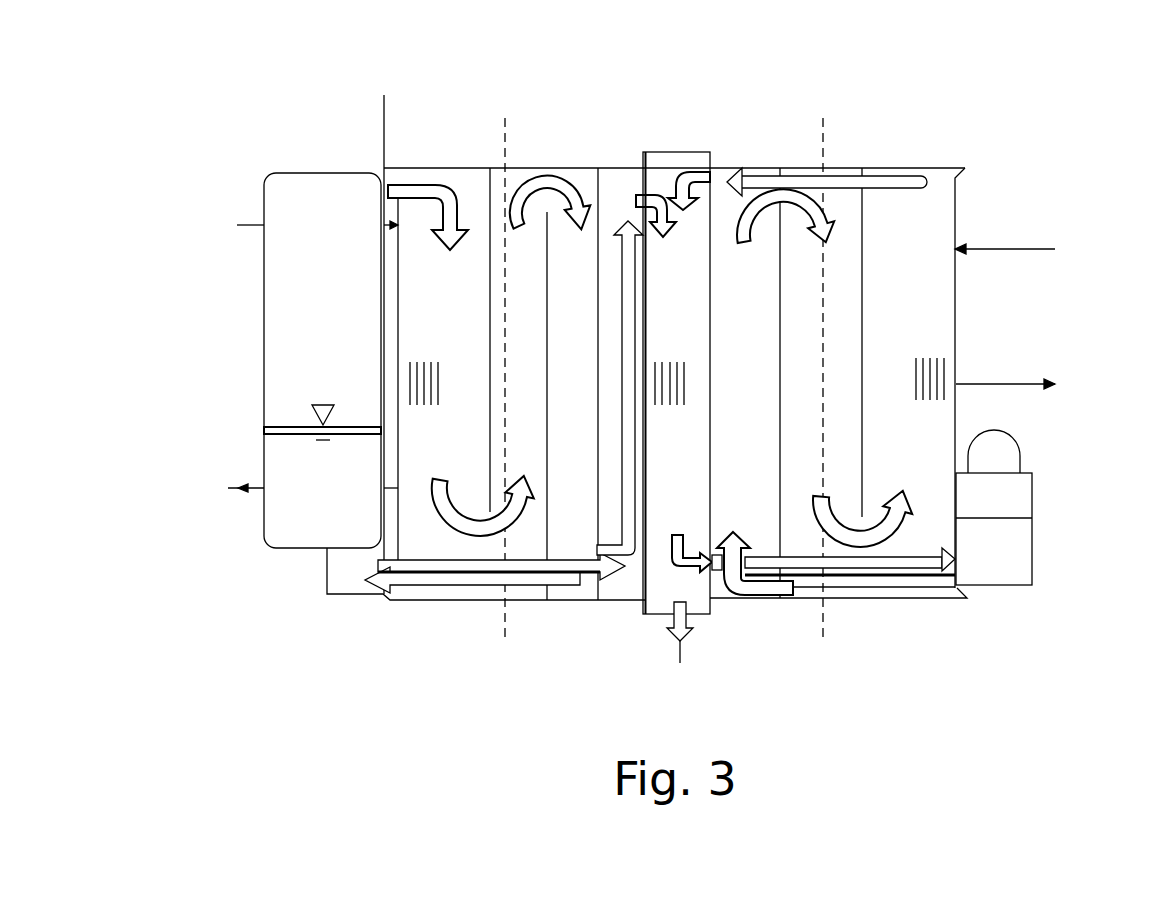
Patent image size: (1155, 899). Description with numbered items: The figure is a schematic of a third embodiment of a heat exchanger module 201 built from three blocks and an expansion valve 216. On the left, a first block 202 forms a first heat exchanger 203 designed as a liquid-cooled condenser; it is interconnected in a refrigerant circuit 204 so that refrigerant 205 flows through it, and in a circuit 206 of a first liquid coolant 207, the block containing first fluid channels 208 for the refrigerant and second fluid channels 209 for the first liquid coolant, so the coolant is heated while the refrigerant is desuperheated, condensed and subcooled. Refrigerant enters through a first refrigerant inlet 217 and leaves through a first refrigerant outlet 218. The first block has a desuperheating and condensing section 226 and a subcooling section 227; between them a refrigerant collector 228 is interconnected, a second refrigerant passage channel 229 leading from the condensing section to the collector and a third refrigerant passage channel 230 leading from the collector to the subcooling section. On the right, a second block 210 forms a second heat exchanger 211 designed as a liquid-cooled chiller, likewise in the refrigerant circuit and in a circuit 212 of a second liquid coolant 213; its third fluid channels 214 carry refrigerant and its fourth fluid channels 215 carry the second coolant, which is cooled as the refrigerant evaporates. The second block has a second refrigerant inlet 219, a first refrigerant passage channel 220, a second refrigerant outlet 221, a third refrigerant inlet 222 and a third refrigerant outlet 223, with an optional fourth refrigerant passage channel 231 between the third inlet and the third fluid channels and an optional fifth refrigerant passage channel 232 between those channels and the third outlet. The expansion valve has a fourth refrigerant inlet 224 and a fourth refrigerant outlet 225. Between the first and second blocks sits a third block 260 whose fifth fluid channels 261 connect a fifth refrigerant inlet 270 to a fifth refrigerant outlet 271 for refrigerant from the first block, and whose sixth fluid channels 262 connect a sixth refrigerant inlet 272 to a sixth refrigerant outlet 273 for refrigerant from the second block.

The heat exchanger module 201 is at (1026, 88).
The first block 202 is at (575, 158).
The first heat exchanger 203 is at (535, 158).
The refrigerant circuit 204 is at (384, 108).
The refrigerant 205 is at (382, 122).
The circuit of a first liquid coolant 206 is at (233, 228).
The first liquid coolant 207 is at (232, 224).
The first fluid channels 208 is at (415, 378).
The second fluid channels 209 is at (423, 395).
The second block 210 is at (833, 166).
The second heat exchanger 211 is at (872, 166).
The circuit of a second liquid coolant 212 is at (997, 248).
The second liquid coolant 213 is at (1055, 248).
The third fluid channels 214 is at (943, 390).
The fourth fluid channels 215 is at (935, 398).
The expansion valve 216 is at (1052, 556).
The first refrigerant inlet 217 is at (415, 188).
The first refrigerant outlet 218 is at (638, 196).
The second refrigerant inlet 219 is at (722, 530).
The first refrigerant passage channel 220 is at (813, 568).
The second refrigerant outlet 221 is at (958, 545).
The third refrigerant inlet 222 is at (943, 588).
The third refrigerant outlet 223 is at (742, 176).
The fourth refrigerant inlet 224 is at (958, 572).
The fourth refrigerant outlet 225 is at (960, 592).
The desuperheating and condensing section 226 is at (433, 538).
The subcooling section 227 is at (622, 580).
The refrigerant collector 228 is at (305, 200).
The second refrigerant passage channel 229 is at (478, 578).
The third refrigerant passage channel 230 is at (539, 562).
The fourth refrigerant passage channel 231 is at (882, 580).
The fifth refrigerant passage channel 232 is at (918, 182).
The third block 260 is at (675, 163).
The fifth fluid channels 261 is at (684, 372).
The sixth fluid channels 262 is at (688, 396).
The fifth refrigerant inlet 270 is at (648, 186).
The fifth refrigerant outlet 271 is at (698, 570).
The sixth refrigerant inlet 272 is at (694, 172).
The sixth refrigerant outlet 273 is at (676, 650).